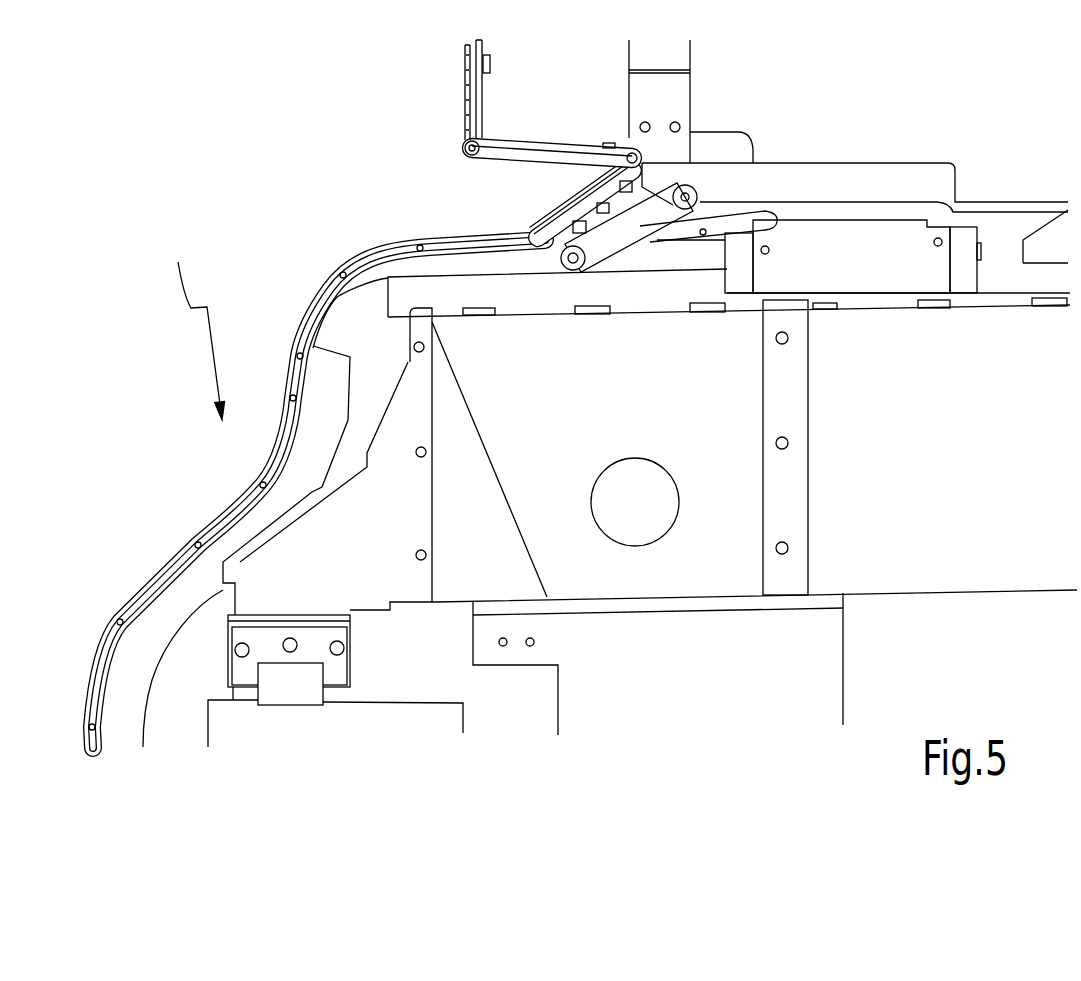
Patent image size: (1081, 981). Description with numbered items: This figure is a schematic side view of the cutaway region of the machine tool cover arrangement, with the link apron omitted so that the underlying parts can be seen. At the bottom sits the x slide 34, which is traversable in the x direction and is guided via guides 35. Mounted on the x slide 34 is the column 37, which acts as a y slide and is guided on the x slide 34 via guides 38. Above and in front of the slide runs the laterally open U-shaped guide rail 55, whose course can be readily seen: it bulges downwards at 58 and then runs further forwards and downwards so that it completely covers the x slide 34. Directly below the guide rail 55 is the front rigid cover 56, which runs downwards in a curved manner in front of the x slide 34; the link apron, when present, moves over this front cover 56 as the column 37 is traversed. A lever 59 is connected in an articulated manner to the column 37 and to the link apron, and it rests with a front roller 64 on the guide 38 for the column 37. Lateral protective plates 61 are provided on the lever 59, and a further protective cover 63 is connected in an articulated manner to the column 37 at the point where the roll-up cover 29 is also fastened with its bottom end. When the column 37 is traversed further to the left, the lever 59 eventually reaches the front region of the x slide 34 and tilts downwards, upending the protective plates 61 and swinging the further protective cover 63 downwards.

The roll-up cover 29 is at (463, 97).
The further protective cover 63 is at (550, 153).
The column 37 is at (783, 183).
The lateral protective plate 61 is at (553, 223).
The U-shaped rail 55 is at (313, 300).
The downward bulge of guide rail 58 is at (195, 325).
The lever 59 is at (623, 232).
The front roller 64 is at (572, 268).
The x slide 34 is at (691, 410).
The guides 38 is at (998, 297).
The guides 35 is at (293, 688).
The front rigid cover 56 is at (132, 698).